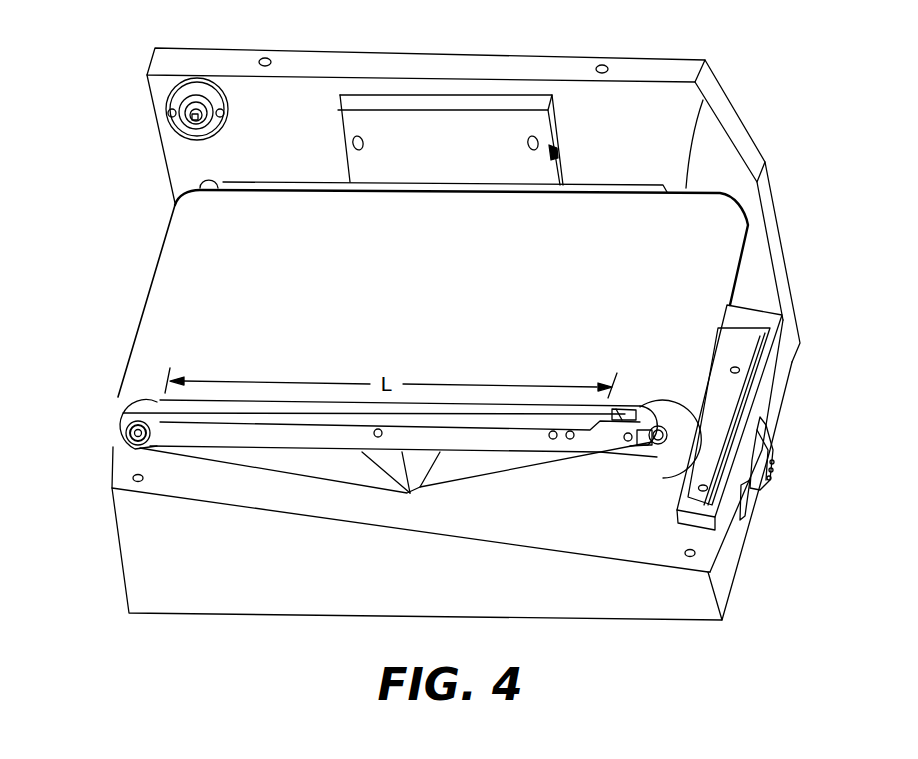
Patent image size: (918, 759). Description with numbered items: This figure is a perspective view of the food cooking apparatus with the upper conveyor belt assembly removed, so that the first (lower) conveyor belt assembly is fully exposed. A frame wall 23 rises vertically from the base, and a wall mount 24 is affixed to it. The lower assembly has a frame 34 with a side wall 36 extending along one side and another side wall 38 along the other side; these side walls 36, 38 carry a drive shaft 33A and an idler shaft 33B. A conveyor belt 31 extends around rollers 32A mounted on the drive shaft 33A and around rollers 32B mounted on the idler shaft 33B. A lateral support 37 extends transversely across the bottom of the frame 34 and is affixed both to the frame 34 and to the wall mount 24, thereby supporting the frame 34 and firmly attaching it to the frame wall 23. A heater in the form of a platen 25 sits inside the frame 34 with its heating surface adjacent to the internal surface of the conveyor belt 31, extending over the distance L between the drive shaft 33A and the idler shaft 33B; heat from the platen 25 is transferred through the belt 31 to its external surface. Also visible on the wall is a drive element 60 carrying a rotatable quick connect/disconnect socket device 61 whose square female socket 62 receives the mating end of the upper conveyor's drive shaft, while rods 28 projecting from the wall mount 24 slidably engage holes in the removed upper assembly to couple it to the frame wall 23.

The frame wall 23 is at (667, 68).
The wall mount 24 is at (543, 172).
The platen 25 is at (225, 417).
The rods 28 is at (527, 140).
The conveyor belt 31 is at (434, 307).
The rollers 32A is at (120, 413).
The rollers 32B is at (677, 445).
The drive shaft 33A is at (133, 447).
The idler shaft 33B is at (659, 444).
The frame 34 is at (628, 398).
The side wall 36 is at (538, 442).
The lateral support 37 is at (393, 468).
The side wall 38 is at (703, 100).
The drive element 60 is at (218, 78).
The quick connect/disconnect socket device 61 is at (210, 118).
The female socket 62 is at (193, 118).